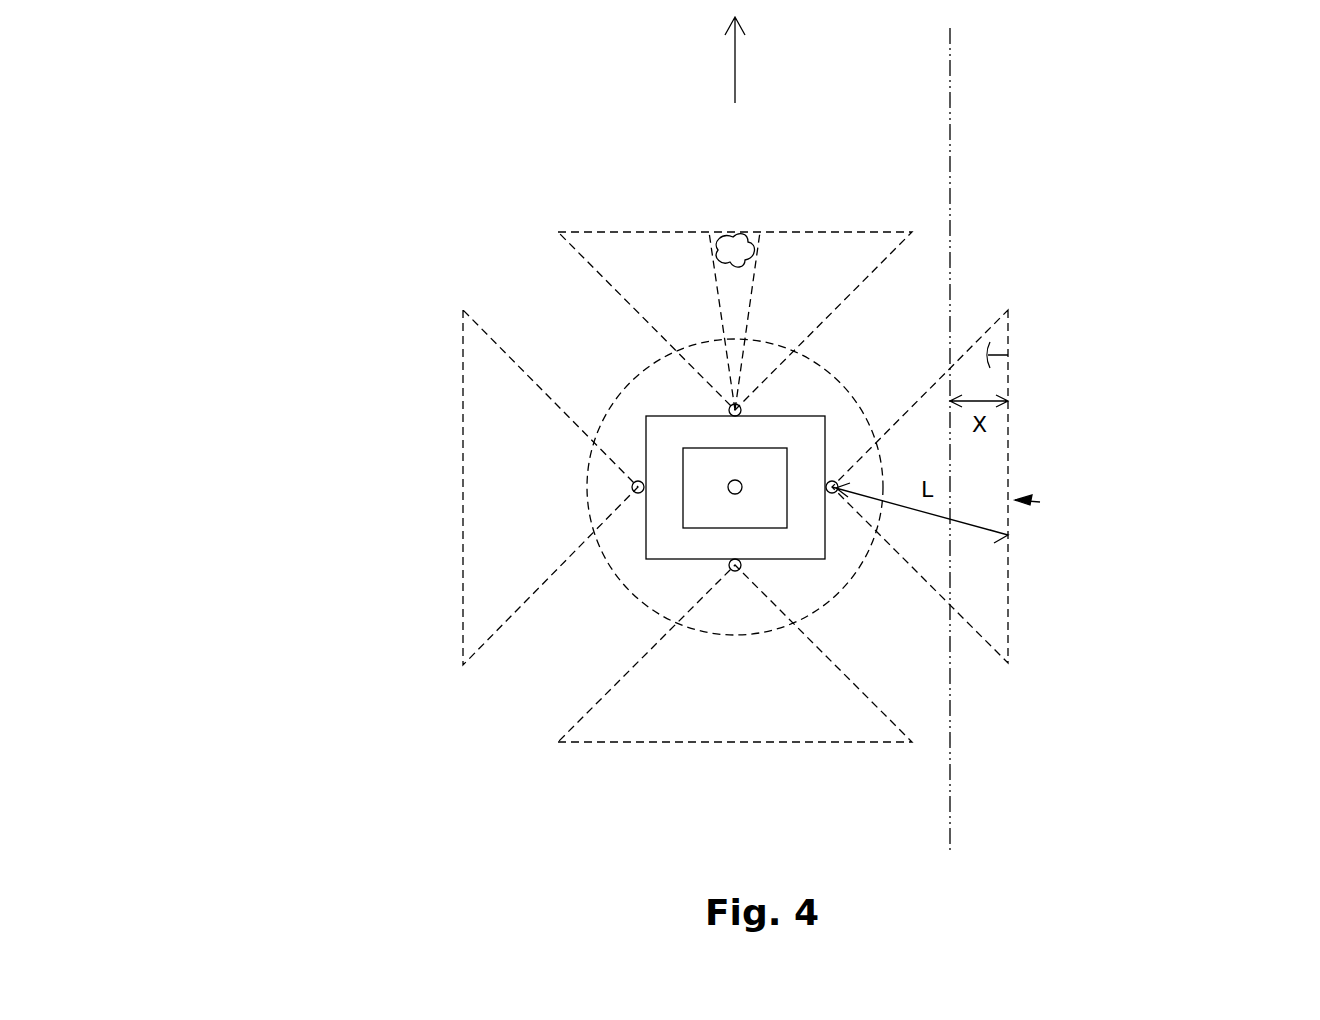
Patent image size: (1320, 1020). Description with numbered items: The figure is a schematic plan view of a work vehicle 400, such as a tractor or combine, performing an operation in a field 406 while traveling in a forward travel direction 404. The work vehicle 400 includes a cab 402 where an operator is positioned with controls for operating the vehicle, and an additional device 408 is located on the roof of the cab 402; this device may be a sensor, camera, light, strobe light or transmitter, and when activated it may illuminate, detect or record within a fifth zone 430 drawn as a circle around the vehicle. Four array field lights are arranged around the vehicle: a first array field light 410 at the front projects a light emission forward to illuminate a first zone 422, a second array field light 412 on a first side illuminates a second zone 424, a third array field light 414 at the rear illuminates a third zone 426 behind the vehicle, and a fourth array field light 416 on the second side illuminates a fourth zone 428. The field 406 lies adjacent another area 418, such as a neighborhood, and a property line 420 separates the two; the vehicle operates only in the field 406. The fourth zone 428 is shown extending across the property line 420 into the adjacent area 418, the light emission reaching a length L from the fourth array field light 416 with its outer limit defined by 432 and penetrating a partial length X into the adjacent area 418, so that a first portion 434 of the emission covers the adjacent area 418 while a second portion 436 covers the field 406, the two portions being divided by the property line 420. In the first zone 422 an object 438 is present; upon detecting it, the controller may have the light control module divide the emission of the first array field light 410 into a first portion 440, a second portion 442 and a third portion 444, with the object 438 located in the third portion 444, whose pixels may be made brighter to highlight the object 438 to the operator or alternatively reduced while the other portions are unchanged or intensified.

The work vehicle 400 is at (646, 538).
The cab 402 is at (694, 528).
The forward travel direction 404 is at (735, 62).
The field 406 is at (270, 283).
The additional device 408 is at (729, 481).
The first array field light 410 is at (729, 408).
The second array field light 412 is at (632, 488).
The third array field light 414 is at (735, 572).
The fourth array field light 416 is at (836, 482).
The adjacent area 418 is at (1290, 278).
The property line 420 is at (950, 813).
The first zone 422 is at (838, 232).
The second zone 424 is at (462, 610).
The third zone 426 is at (630, 742).
The fourth zone 428 is at (1008, 600).
The fifth zone 430 is at (773, 632).
The outer limit of light emission 432 is at (1040, 502).
The first portion of light emission 434 is at (1008, 355).
The second portion of light emission 436 is at (945, 463).
The object 438 is at (733, 255).
The first portion 440 is at (672, 281).
The second portion 442 is at (839, 283).
The third portion 444 is at (733, 282).